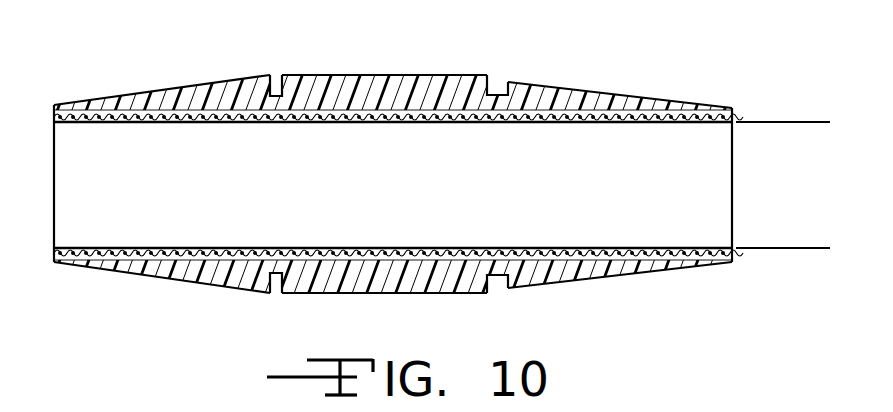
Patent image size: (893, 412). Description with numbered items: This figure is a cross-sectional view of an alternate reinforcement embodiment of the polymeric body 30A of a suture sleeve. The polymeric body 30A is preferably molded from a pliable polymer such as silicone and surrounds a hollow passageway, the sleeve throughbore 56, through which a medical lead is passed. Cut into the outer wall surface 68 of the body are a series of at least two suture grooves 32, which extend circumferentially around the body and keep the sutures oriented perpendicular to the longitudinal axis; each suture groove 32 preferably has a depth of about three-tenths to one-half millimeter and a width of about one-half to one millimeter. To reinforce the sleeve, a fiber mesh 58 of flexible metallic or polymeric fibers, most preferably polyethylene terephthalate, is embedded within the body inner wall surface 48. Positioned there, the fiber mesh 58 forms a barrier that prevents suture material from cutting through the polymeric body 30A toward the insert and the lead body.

The polymeric body 30A is at (342, 86).
The outer wall surface 68 is at (437, 75).
The suture groove 32 is at (497, 79).
The fiber mesh 58 is at (600, 106).
The body inner wall surface 48 is at (404, 122).
The sleeve throughbore 56 is at (815, 128).